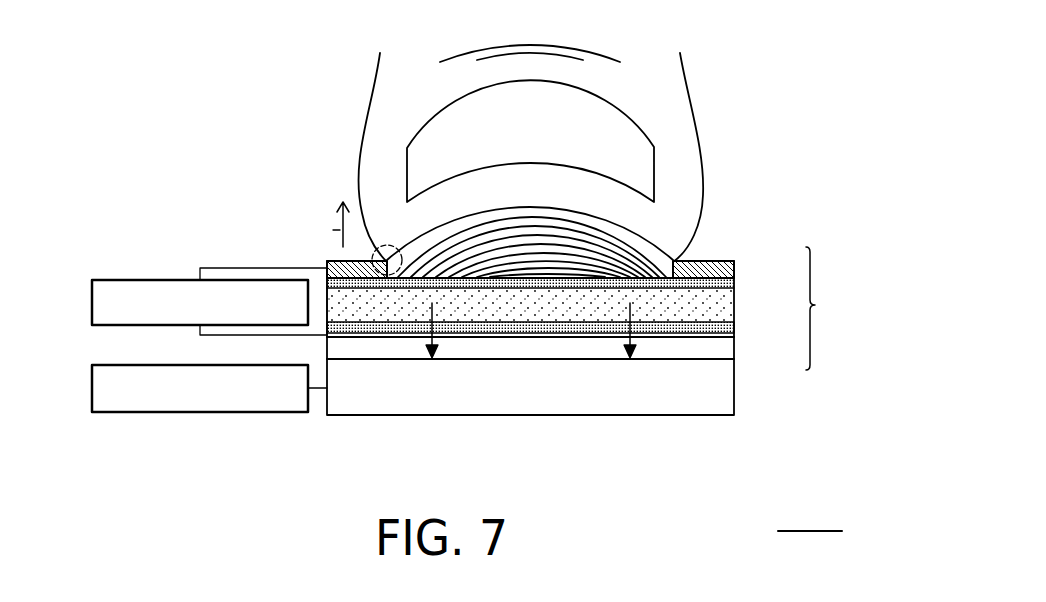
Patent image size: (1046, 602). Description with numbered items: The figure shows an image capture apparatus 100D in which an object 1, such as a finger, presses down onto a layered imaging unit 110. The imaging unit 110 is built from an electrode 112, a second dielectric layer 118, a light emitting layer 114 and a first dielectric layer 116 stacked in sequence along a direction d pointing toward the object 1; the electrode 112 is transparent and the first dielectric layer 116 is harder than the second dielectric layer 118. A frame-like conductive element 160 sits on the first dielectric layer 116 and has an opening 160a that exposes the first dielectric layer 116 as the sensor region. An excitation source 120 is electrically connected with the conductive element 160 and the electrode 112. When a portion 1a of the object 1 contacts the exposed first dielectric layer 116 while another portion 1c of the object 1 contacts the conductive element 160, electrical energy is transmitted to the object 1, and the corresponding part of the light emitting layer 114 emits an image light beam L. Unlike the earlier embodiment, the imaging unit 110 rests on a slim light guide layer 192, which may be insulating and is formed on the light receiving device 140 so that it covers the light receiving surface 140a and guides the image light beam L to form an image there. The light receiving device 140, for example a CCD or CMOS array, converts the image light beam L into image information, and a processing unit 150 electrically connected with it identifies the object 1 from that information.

The object 1 is at (688, 119).
The portion of the object 1a is at (671, 262).
The another portion of the object 1c is at (387, 245).
The direction d is at (334, 224).
The conductive element 160 is at (327, 260).
The opening 160a is at (670, 263).
The first dielectric layer 116 is at (720, 270).
The light emitting layer 114 is at (720, 305).
The second dielectric layer 118 is at (720, 323).
The electrode 112 is at (720, 335).
The imaging unit 110 is at (592, 308).
The light guide layer 192 is at (710, 350).
The light receiving device 140 is at (712, 403).
The light receiving surface 140a is at (597, 358).
The image light beam L is at (632, 315).
The excitation source 120 is at (135, 280).
The processing unit 150 is at (135, 365).
The image capture apparatus 100D is at (810, 513).